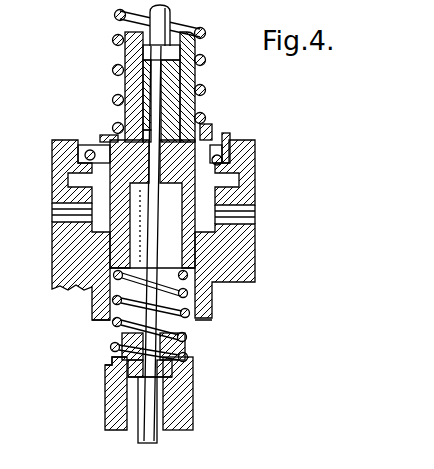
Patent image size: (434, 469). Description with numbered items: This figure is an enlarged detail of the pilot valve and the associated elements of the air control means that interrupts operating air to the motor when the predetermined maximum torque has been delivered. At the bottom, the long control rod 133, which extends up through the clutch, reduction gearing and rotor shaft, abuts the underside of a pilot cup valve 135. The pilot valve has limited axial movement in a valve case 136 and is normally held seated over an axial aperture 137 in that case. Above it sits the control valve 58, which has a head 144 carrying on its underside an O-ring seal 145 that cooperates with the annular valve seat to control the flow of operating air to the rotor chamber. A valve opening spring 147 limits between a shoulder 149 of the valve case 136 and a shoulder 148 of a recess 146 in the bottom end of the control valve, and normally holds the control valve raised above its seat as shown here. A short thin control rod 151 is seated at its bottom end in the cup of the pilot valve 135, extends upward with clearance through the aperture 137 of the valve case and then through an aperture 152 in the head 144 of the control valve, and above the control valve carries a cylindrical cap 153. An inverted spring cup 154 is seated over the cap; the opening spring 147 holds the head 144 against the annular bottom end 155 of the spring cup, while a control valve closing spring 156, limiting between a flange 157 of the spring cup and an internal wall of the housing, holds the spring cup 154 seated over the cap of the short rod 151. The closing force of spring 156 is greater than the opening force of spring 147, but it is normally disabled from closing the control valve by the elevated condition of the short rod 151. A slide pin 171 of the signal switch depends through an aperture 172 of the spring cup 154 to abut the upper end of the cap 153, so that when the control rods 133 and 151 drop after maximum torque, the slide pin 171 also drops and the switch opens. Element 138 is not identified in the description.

The slide pin 171 is at (172, 19).
The aperture of the spring cup 172 is at (143, 32).
The control valve closing spring 156 is at (125, 42).
The cylindrical cap 153 is at (194, 60).
The spring cup 154 is at (113, 78).
The annular bottom end of the spring cup 155 is at (110, 135).
The flange of the spring cup 157 is at (214, 129).
The control valve 58 is at (231, 144).
The aperture of the head 152 is at (108, 166).
The head of the control valve 144 is at (90, 189).
The O-ring seal 145 is at (254, 168).
The short thin control rod 151 is at (213, 206).
The recess 146 is at (56, 257).
The shoulder of the recess 148 is at (213, 257).
The valve opening spring 147 is at (108, 300).
The axial aperture 137 is at (97, 318).
The spring ring 138 is at (110, 347).
The shoulder of the pilot valve case 149 is at (108, 360).
The pilot cup valve 135 is at (163, 370).
The valve case 136 is at (195, 400).
The long control rod 133 is at (158, 440).